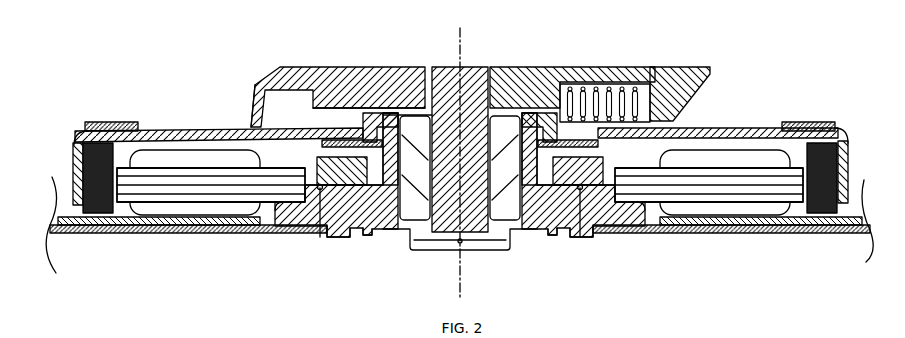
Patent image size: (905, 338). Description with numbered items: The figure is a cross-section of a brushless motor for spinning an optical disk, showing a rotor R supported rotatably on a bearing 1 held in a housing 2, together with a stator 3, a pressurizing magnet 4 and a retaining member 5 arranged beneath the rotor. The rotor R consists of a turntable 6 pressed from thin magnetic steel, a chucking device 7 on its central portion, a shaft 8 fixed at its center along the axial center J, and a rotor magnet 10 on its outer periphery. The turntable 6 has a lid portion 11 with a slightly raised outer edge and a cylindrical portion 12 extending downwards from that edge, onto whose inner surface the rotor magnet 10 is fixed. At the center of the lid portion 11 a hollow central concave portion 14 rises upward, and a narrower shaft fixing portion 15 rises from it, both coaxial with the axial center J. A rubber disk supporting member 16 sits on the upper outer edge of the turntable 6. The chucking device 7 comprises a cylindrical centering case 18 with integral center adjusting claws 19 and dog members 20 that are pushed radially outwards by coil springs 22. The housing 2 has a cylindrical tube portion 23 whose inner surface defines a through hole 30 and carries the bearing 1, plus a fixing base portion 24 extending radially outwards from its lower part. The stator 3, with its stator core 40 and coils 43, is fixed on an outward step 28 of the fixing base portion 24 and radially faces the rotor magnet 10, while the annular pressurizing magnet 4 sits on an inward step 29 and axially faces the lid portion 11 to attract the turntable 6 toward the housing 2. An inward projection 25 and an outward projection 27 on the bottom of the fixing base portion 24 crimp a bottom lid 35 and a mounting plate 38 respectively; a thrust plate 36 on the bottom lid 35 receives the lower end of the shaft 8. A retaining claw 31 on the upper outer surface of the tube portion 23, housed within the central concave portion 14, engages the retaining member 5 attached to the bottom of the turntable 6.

The bearing 1 is at (404, 212).
The housing 2 is at (351, 231).
The stator 3 is at (460, 226).
The pressurizing magnet 4 is at (316, 158).
The retaining member 5 is at (313, 129).
The turntable 6 is at (77, 133).
The chucking device 7 is at (597, 73).
The shaft 8 is at (444, 66).
The rotor magnet 10 is at (82, 151).
The lid portion 11 is at (200, 129).
The cylindrical portion 12 is at (75, 176).
The central concave portion 14 is at (345, 107).
The shaft fixing portion 15 is at (486, 65).
The disk supporting member 16 is at (109, 121).
The centering case 18 is at (297, 66).
The center adjusting claws 19 is at (256, 88).
The dog members 20 is at (675, 75).
The coil springs 22 is at (605, 88).
The tube portion 23 is at (396, 222).
The fixing base portion 24 is at (303, 220).
The inward projection 25 is at (367, 236).
The outward projection 27 is at (331, 238).
The outward step 28 is at (283, 229).
The inward step 29 is at (319, 240).
The through hole 30 is at (400, 116).
The retaining claw 31 is at (377, 120).
The bottom lid 35 is at (497, 250).
The thrust plate 36 is at (439, 249).
The mounting plate 38 is at (105, 233).
The stator core 40 is at (225, 192).
The coils 43 is at (232, 265).
The axial center J is at (460, 156).
The rotor R is at (735, 115).